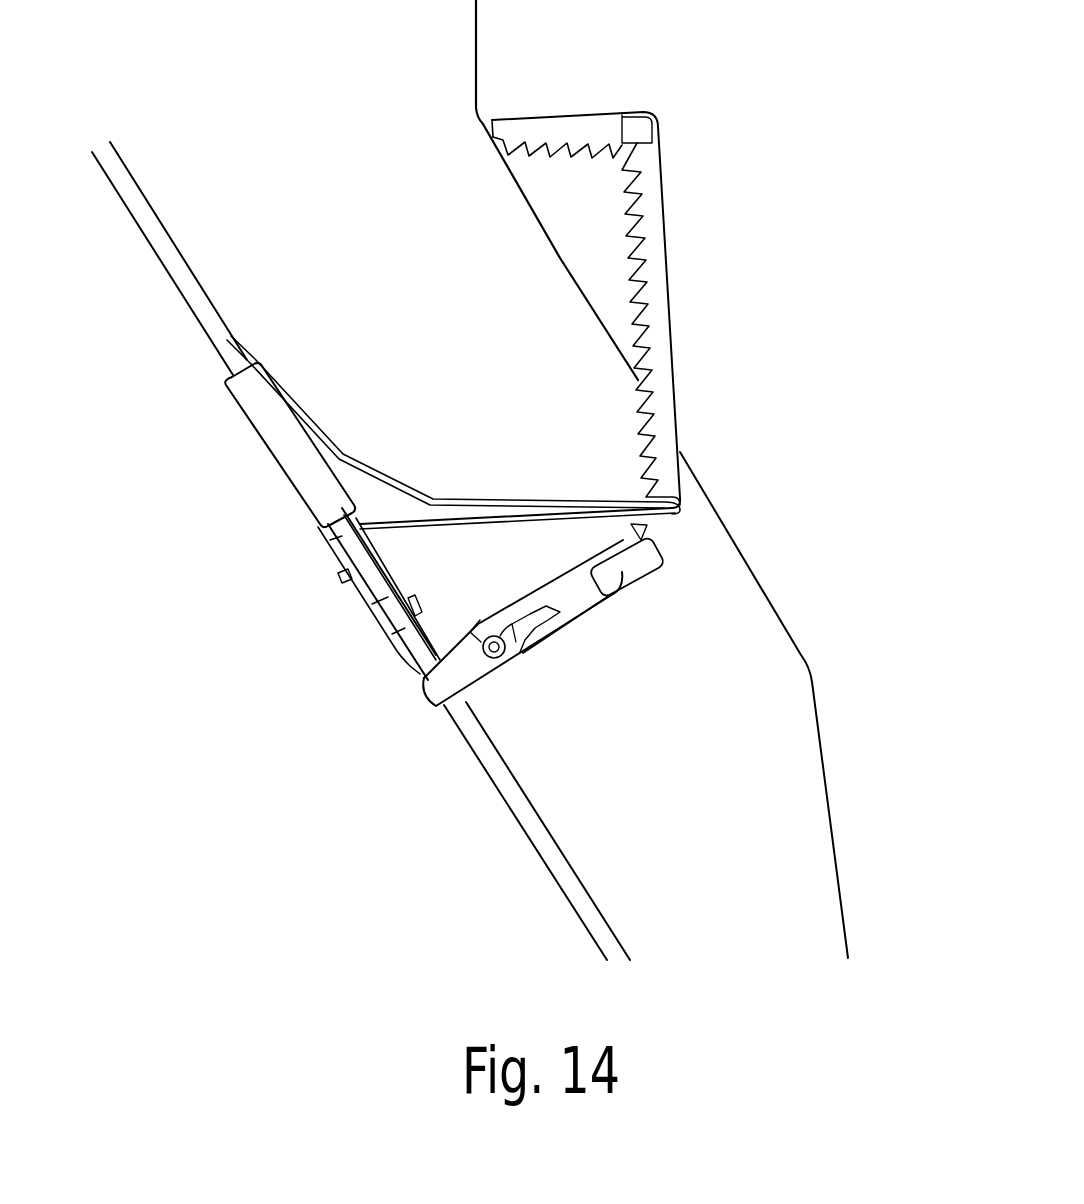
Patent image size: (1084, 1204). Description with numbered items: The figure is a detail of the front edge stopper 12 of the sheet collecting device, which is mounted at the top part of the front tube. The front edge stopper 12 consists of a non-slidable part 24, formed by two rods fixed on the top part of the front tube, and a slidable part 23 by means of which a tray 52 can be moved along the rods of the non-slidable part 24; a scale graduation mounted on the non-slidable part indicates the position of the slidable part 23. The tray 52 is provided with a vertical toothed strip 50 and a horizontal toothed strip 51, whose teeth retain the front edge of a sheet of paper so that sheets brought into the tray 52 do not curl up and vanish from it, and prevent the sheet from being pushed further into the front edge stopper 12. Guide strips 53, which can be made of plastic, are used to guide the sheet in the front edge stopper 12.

The front edge stopper 12 is at (447, 258).
The slidable part 23 is at (272, 430).
The non-slidable part 24 is at (135, 200).
The vertical toothed strip 50 is at (648, 192).
The horizontal toothed strip 51 is at (577, 120).
The tray 52 is at (421, 524).
The guide strips 53 is at (745, 563).